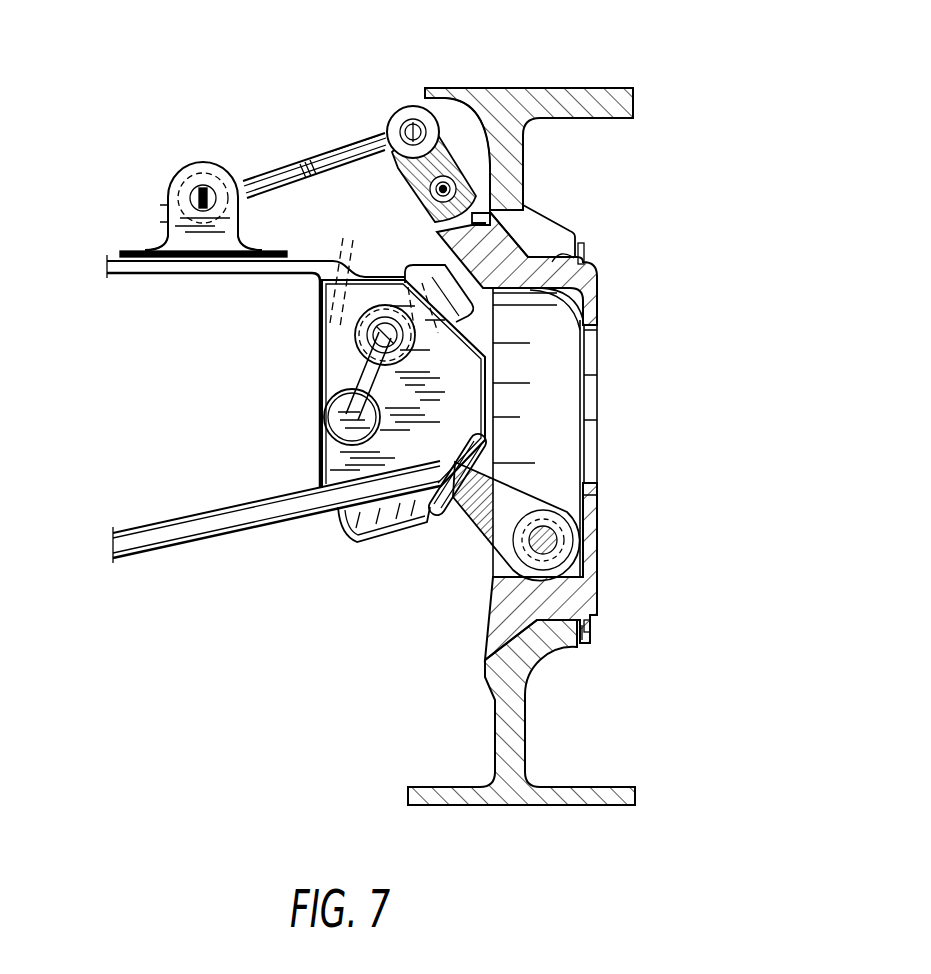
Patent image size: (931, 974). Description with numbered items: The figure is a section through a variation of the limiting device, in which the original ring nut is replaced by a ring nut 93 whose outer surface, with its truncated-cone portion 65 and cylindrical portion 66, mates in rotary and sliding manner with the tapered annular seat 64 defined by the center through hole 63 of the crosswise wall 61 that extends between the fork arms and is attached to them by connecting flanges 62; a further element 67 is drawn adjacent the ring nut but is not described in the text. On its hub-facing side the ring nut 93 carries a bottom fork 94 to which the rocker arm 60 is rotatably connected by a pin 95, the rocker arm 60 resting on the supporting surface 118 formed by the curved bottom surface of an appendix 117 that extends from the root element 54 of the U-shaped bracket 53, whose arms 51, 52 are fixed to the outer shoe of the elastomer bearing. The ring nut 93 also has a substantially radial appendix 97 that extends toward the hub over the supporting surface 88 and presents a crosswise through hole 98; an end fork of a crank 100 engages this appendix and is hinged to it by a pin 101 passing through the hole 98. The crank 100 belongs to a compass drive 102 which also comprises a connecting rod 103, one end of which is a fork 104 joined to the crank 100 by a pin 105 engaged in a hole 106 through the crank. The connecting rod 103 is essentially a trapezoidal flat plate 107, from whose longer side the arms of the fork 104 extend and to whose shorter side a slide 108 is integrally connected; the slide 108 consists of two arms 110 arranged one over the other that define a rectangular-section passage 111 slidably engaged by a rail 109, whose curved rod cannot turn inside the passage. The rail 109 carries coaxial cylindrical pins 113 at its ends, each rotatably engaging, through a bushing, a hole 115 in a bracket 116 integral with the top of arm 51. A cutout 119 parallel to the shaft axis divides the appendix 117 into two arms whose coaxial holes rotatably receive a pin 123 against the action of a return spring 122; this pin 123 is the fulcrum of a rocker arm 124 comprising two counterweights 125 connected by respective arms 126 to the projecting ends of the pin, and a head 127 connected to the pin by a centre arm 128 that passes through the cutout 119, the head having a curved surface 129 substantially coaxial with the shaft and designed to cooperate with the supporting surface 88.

The arm 51 is at (247, 263).
The arm 52 is at (187, 516).
The U-shaped bracket 53 is at (236, 535).
The root element 54 is at (337, 368).
The rocker arm 60 is at (453, 497).
The crosswise wall 61 is at (513, 737).
The connecting flanges 62 is at (607, 107).
The center through hole 63 is at (590, 285).
The tapered annular seat 64 is at (545, 262).
The truncated-cone portion 65 is at (560, 245).
The cylindrical portion 66 is at (578, 240).
The retaining clip 67 is at (586, 262).
The supporting surface 88 is at (487, 292).
The ring nut 93 is at (600, 282).
The bottom fork 94 is at (577, 513).
The pin 95 is at (545, 541).
The radial appendix 97 is at (525, 157).
The crosswise through hole 98 is at (474, 112).
The crank 100 is at (443, 180).
The pin 101 is at (490, 105).
The compass drive 102 is at (320, 122).
The connecting rod 103 is at (288, 160).
The fork 104 is at (392, 112).
The pin 105 is at (390, 113).
The hole 106 is at (416, 125).
The flat plate 107 is at (320, 165).
The slide 108 is at (212, 167).
The rail 109 is at (172, 167).
The arms 110 is at (165, 203).
The rectangular-section passage 111 is at (212, 203).
The cylindrical pins 113 is at (202, 168).
The hole 115 is at (201, 212).
The bracket 116 is at (230, 237).
The appendix 117 is at (360, 473).
The supporting surface 118 is at (472, 481).
The cutout 119 is at (343, 280).
The return spring 122 is at (337, 313).
The pin 123 is at (380, 340).
The rocker arm 124 is at (380, 258).
The counterweights 125 is at (347, 423).
The arms 126 is at (335, 392).
The head 127 is at (445, 278).
The centre arm 128 is at (403, 384).
The curved surface 129 is at (518, 245).